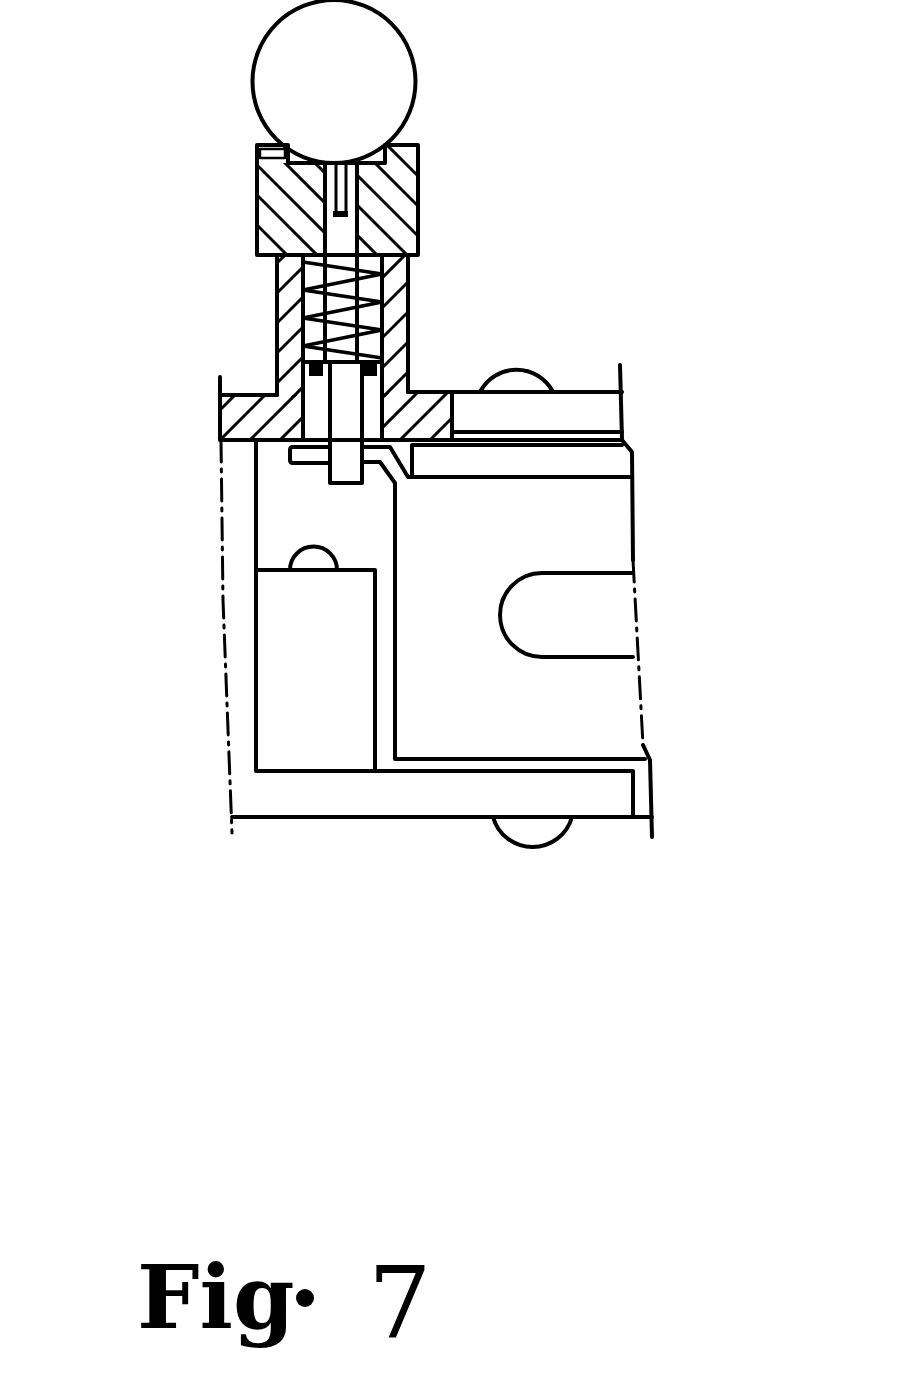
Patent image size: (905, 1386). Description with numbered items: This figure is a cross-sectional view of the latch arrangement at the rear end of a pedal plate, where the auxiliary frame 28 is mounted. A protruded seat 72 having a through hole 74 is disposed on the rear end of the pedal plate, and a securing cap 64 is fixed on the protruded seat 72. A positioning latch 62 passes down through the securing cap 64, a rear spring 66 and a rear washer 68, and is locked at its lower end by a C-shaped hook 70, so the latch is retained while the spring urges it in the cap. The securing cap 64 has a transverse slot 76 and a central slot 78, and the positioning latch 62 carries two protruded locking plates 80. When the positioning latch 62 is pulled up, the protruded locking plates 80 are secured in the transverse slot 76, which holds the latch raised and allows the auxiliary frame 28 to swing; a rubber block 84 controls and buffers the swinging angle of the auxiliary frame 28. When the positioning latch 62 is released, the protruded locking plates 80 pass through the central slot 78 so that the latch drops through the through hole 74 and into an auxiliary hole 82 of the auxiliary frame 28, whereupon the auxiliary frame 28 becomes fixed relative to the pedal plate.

The auxiliary frame 28 is at (437, 713).
The positioning latch 62 is at (392, 44).
The securing cap 64 is at (408, 221).
The rear spring 66 is at (409, 292).
The rear washer 68 is at (410, 345).
The C-shaped hook 70 is at (305, 367).
The protruded seat 72 is at (292, 282).
The through hole 74 is at (312, 311).
The transverse slot 76 is at (258, 154).
The central slot 78 is at (335, 190).
The protruded locking plates 80 is at (210, 188).
The auxiliary hole 82 is at (318, 455).
The rubber block 84 is at (287, 660).